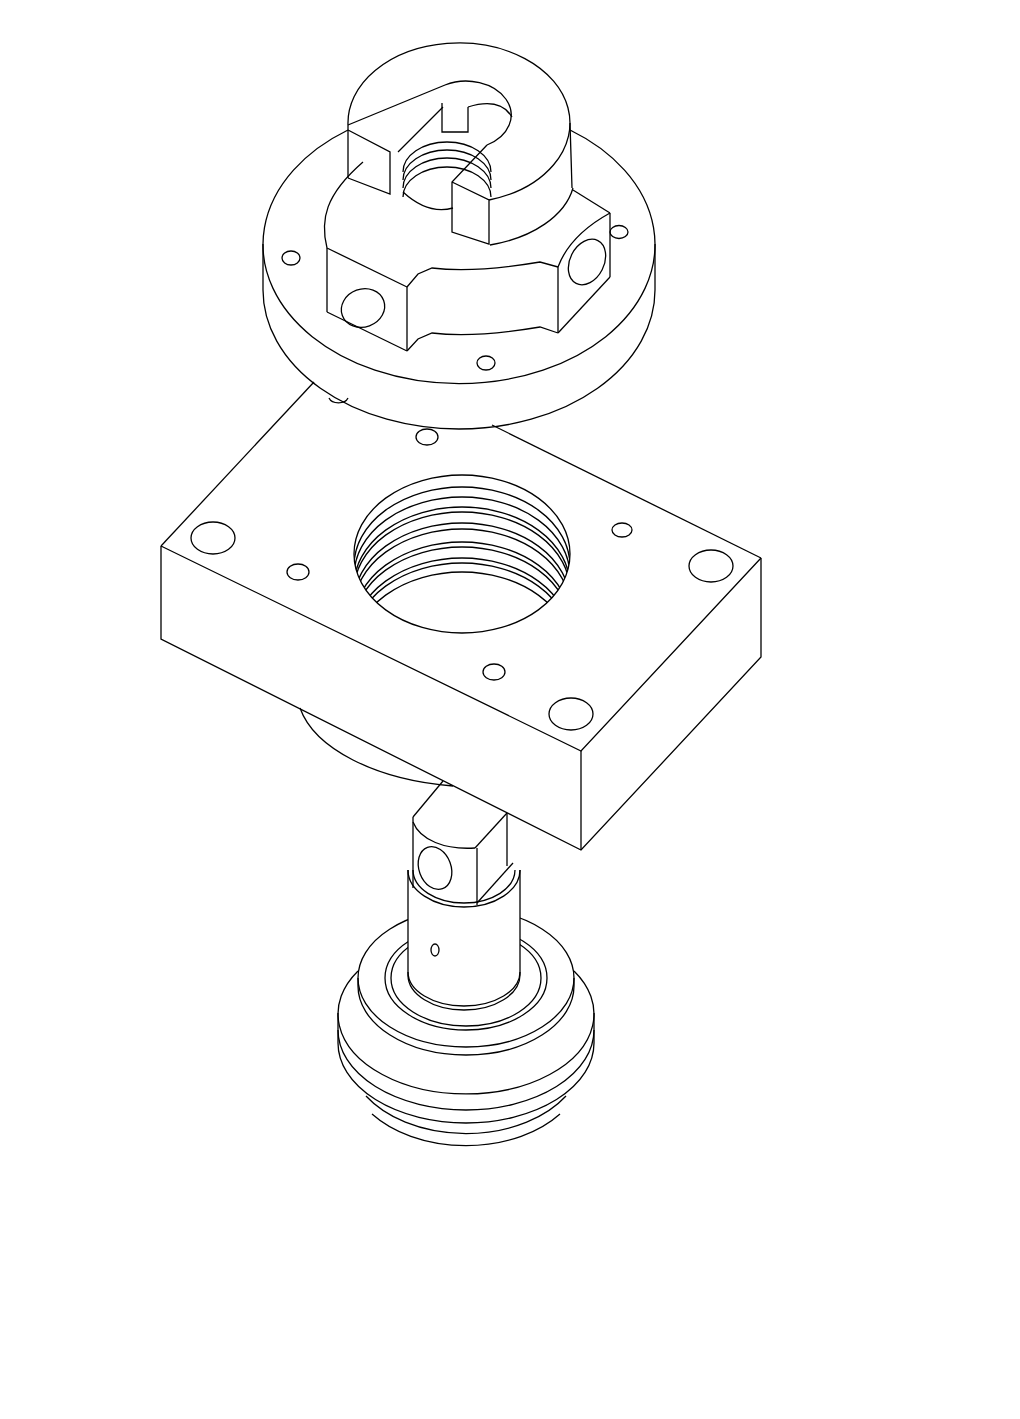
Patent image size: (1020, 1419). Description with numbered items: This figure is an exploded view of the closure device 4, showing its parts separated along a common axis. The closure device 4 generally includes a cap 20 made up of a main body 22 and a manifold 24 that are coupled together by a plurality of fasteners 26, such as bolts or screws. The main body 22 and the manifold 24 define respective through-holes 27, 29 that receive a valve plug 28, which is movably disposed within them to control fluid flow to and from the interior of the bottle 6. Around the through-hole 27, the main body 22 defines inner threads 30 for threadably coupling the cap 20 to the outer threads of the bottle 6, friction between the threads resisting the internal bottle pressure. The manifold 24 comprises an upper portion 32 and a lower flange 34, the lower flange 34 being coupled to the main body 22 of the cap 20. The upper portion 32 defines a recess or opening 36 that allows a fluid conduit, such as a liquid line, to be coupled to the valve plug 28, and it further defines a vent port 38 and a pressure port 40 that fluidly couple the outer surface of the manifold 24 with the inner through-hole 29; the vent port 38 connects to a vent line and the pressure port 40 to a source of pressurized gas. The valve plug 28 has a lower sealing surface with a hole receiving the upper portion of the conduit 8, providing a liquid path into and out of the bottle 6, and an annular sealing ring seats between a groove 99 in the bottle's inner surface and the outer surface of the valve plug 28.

The closure device 4 is at (860, 407).
The bottle 6 is at (543, 33).
The conduit 8 is at (282, 122).
The cap 20 is at (73, 43).
The main body 22 is at (678, 505).
The manifold 24 is at (677, 217).
The fasteners 26 is at (628, 529).
The through-hole 27 is at (463, 570).
The valve plug 28 is at (634, 977).
The through-hole 29 is at (400, 191).
The inner threads 30 is at (480, 610).
The upper portion 32 is at (583, 148).
The lower flange 34 is at (655, 302).
The recess or opening 36 is at (418, 222).
The vent port 38 is at (352, 308).
The pressure port 40 is at (600, 258).
The groove 99 is at (413, 1123).